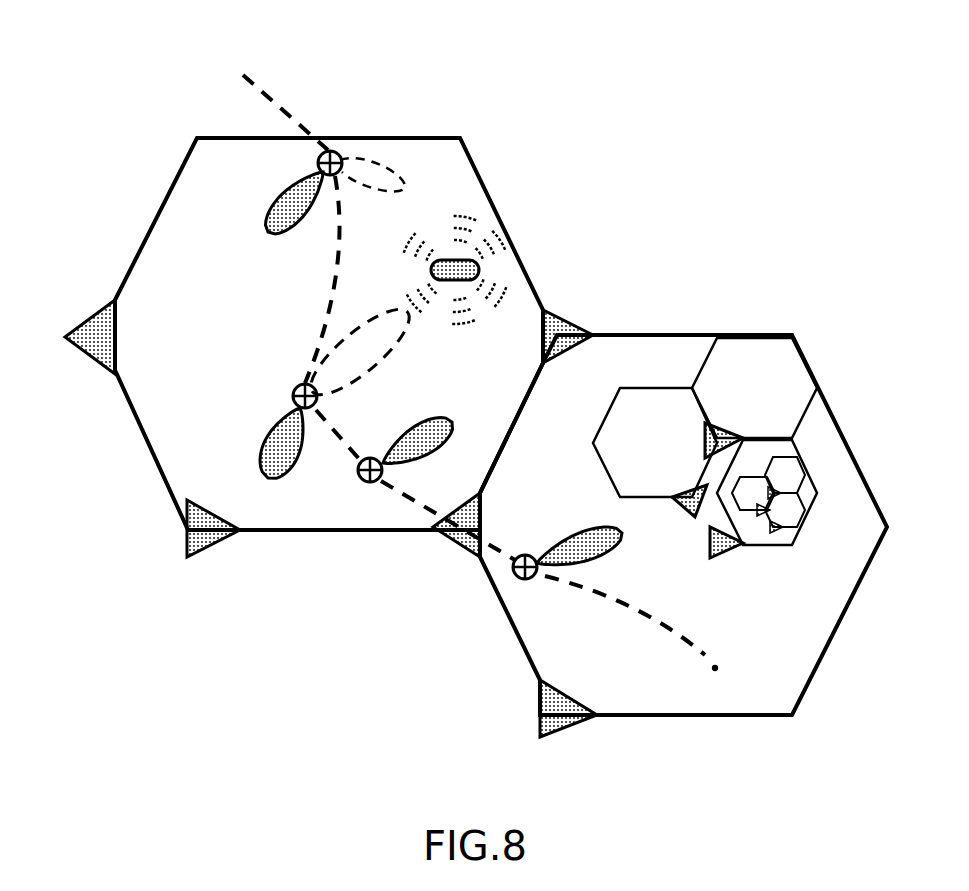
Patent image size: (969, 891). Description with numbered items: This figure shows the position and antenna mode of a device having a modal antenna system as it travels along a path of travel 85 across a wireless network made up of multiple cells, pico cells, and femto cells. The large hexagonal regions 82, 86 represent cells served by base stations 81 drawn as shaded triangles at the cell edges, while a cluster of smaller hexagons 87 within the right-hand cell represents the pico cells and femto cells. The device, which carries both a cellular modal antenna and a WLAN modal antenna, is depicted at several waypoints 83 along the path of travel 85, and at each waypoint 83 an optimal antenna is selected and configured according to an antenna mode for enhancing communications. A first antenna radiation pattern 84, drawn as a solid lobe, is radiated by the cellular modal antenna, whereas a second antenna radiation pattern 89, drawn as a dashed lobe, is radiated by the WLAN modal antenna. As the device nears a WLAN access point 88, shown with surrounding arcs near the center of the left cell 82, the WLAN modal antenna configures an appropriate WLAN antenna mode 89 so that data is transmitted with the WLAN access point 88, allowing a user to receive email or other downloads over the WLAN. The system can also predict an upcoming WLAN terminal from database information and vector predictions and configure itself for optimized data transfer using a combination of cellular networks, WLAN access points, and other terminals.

The base station 81 is at (568, 330).
The first cell 82 is at (422, 138).
The waypoint 83 is at (300, 387).
The first antenna radiation pattern 84 is at (266, 233).
The movement path 85 is at (262, 88).
The second cell 86 is at (795, 373).
The small cells 87 is at (793, 518).
The WLAN access point 88 is at (458, 279).
The second antenna radiation pattern 89 is at (352, 356).